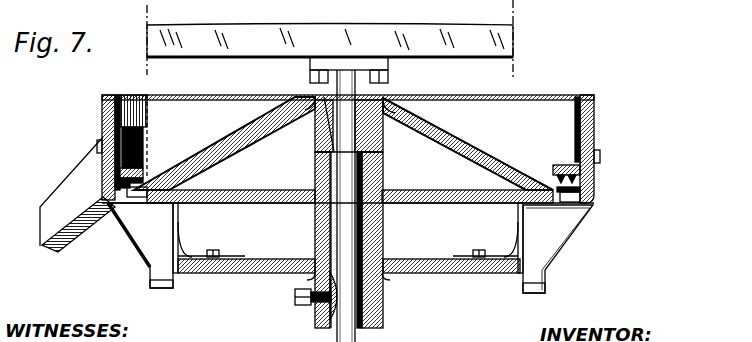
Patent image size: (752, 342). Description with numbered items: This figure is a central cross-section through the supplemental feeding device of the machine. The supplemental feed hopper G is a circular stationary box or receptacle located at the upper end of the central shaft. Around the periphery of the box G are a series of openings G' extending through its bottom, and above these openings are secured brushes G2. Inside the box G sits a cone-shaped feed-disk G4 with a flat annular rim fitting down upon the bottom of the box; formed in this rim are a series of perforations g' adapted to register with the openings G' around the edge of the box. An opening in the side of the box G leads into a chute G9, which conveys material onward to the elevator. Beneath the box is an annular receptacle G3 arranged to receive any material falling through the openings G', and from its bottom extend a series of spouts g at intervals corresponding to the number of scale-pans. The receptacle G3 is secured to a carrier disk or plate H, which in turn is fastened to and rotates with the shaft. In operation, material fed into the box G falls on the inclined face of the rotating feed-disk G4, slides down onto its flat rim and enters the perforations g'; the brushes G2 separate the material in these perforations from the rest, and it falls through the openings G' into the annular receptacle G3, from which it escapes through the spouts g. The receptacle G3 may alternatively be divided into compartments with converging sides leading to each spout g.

The supplemental feed hopper G is at (348, 211).
The openings G' is at (365, 218).
The brushes G2 is at (137, 180).
The annular receptacle G3 is at (143, 145).
The cone-shaped feed-disk G4 is at (466, 145).
The chute G9 is at (77, 194).
The spouts g is at (360, 291).
The perforations g' is at (380, 171).
The carrier disk or plate H is at (435, 248).